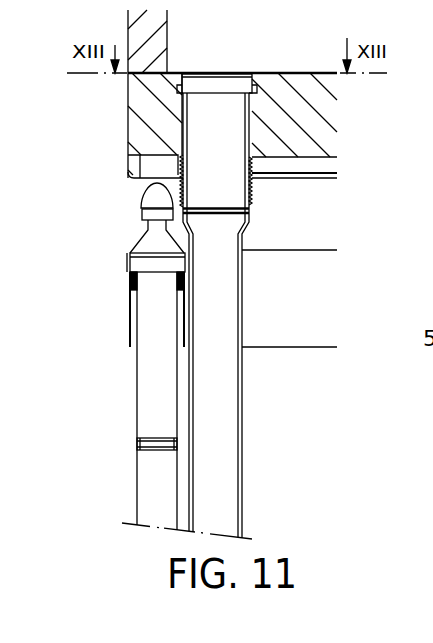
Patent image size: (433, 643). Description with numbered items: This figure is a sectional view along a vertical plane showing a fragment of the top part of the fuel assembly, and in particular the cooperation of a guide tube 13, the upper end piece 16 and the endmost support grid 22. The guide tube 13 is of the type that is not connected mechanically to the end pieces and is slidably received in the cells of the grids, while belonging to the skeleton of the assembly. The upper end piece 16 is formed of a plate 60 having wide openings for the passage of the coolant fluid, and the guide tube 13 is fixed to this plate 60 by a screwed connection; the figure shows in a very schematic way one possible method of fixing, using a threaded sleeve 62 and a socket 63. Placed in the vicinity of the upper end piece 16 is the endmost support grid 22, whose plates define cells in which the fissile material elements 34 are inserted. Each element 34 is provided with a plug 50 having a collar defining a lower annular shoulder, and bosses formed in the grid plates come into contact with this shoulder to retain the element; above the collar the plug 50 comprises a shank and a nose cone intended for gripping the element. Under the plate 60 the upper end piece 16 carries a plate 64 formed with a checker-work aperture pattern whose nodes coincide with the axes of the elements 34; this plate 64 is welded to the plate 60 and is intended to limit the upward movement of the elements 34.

The guide tube 13 is at (243, 368).
The upper end piece 16 is at (128, 90).
The endmost support grid 22 is at (126, 251).
The fissile material element 34 is at (160, 472).
The plug 50 is at (158, 385).
The plate 60 is at (157, 120).
The threaded sleeve 62 is at (251, 213).
The socket 63 is at (247, 126).
The plate 64 is at (315, 179).